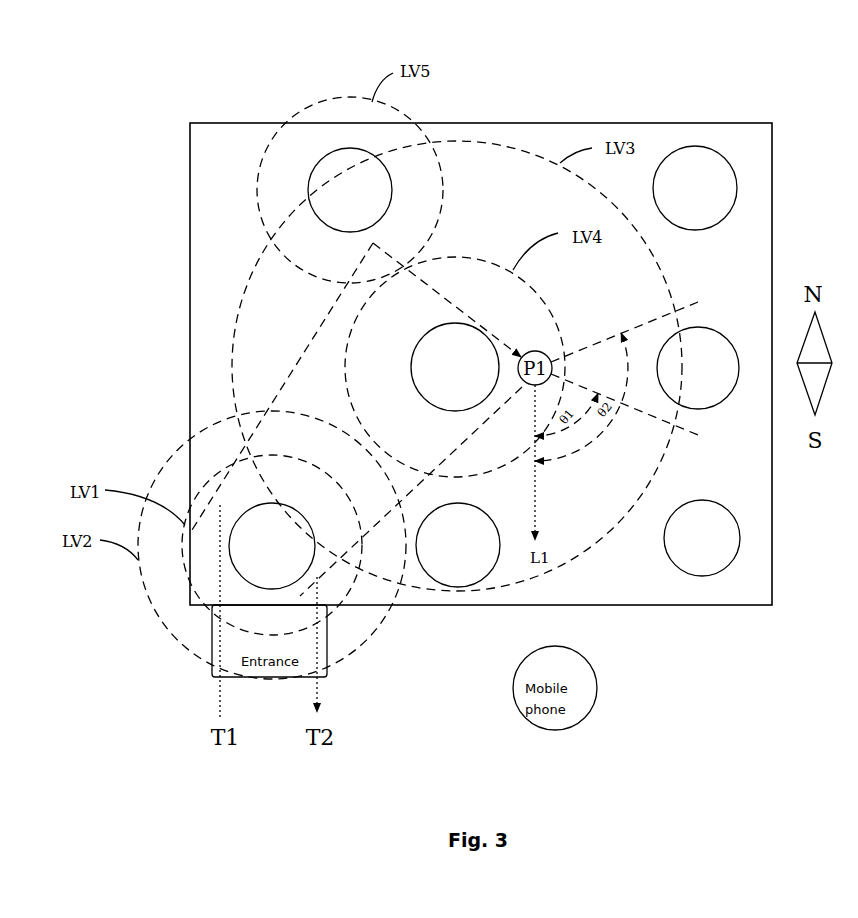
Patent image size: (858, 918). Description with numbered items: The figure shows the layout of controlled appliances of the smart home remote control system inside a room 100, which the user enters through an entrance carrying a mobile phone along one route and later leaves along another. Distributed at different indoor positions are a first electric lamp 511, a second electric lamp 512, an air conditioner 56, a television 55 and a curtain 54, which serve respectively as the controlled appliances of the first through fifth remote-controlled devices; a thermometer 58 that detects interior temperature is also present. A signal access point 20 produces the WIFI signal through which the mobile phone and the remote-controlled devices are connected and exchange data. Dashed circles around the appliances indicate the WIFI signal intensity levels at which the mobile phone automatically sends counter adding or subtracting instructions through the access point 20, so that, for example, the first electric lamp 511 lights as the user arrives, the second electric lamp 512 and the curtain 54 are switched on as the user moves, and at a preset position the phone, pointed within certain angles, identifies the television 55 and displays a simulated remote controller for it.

The room 100 is at (190, 257).
The curtain 54 is at (327, 153).
The second electric lamp 512 is at (466, 327).
The thermometer 58 is at (692, 147).
The television 55 is at (712, 332).
The first electric lamp 511 is at (255, 505).
The air conditioner 56 is at (462, 587).
The signal access point 20 is at (703, 568).